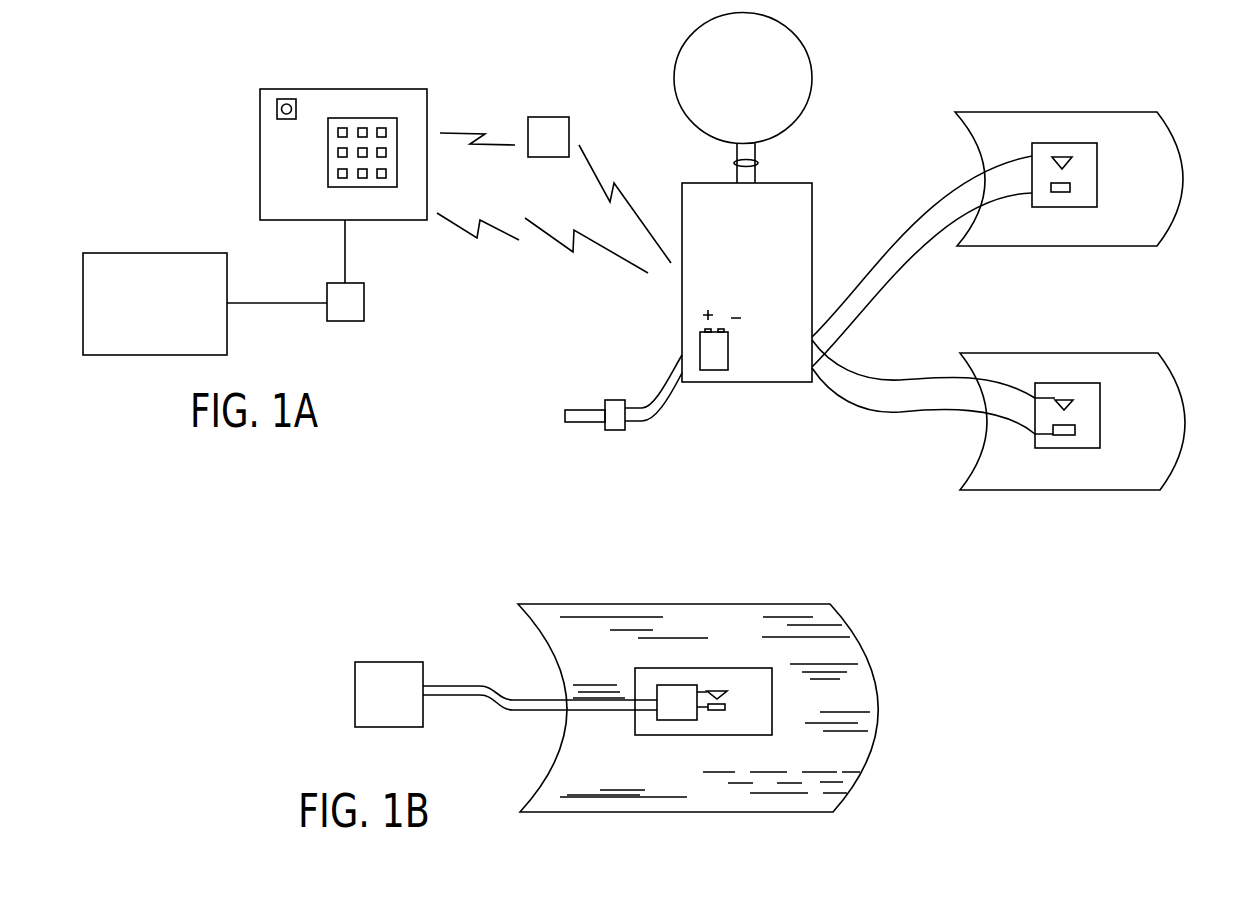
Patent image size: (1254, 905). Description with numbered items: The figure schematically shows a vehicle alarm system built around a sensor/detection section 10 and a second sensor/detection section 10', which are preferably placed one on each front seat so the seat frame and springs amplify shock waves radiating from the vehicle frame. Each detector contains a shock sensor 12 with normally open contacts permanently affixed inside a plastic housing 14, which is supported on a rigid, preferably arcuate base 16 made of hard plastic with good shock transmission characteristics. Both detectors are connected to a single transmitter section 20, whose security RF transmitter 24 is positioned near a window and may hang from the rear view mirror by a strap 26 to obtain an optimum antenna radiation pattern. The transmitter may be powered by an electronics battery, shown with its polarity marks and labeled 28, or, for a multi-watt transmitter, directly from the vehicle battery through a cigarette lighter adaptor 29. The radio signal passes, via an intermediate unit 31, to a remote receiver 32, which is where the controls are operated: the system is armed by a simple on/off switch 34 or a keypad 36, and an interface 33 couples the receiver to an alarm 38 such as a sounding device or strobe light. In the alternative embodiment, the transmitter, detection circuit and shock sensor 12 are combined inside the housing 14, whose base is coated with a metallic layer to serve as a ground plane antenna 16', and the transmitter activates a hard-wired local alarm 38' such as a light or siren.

In FIG. 1A, the sensor/detection section 10 is at (1002, 261).
In FIG. 1A, the second sensor/detection section 10' is at (998, 464).
In FIG. 1A, the shock sensor 12 is at (1083, 184).
In FIG. 1B, the shock sensor 12 is at (757, 703).
In FIG. 1A, the housing 14 is at (1057, 143).
In FIG. 1B, the housing 14 is at (743, 668).
In FIG. 1A, the base 16 is at (1095, 179).
In FIG. 1B, the base 16 is at (739, 708).
In FIG. 1B, the ground plane antenna 16' is at (710, 815).
In FIG. 1A, the transmitter section 20 is at (696, 407).
In FIG. 1A, the security RF transmitter 24 is at (680, 310).
In FIG. 1B, the security RF transmitter 24 is at (680, 684).
In FIG. 1A, the strap 26 is at (779, 138).
In FIG. 1A, the battery 28 is at (728, 366).
In FIG. 1A, the adaptor 29 is at (578, 423).
In FIG. 1A, the remote receiver 31 is at (537, 117).
In FIG. 1A, the remote receiver 32 is at (376, 220).
In FIG. 1A, the interface module 33 is at (345, 321).
In FIG. 1A, the on/off switch 34 is at (278, 99).
In FIG. 1A, the keypad 36 is at (347, 118).
In FIG. 1A, the alarm 38 is at (155, 286).
In FIG. 1B, the local alarm 38' is at (389, 723).